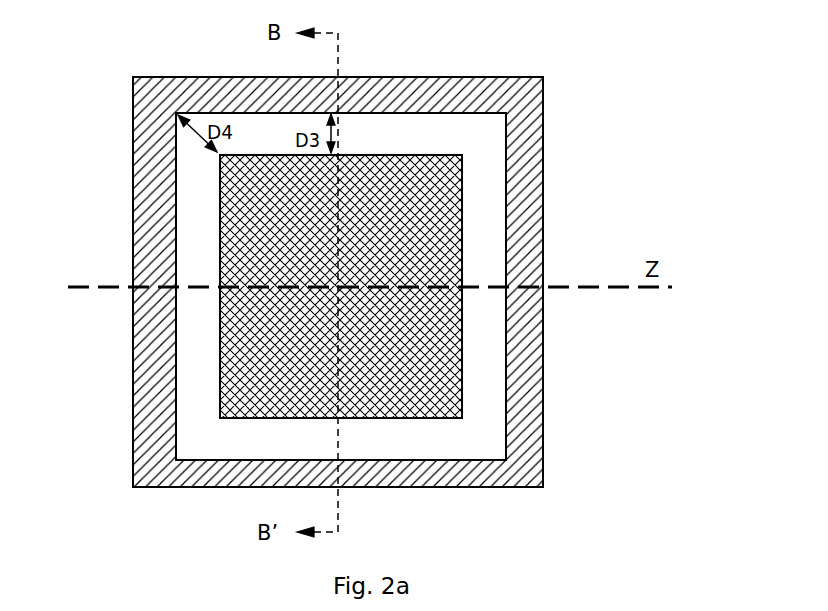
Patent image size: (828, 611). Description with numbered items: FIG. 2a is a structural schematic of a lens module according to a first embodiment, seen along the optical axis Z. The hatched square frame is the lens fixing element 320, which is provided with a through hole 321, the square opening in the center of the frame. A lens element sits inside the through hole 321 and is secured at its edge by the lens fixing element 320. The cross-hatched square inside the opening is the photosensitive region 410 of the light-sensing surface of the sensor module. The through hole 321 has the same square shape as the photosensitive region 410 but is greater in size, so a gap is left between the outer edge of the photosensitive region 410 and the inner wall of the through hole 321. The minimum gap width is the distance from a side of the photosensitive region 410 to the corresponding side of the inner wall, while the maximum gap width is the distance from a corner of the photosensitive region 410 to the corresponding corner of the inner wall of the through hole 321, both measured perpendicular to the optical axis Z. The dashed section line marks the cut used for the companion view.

The lens fixing element 320 is at (470, 122).
The through hole 321 is at (508, 170).
The photosensitive region 410 is at (362, 227).